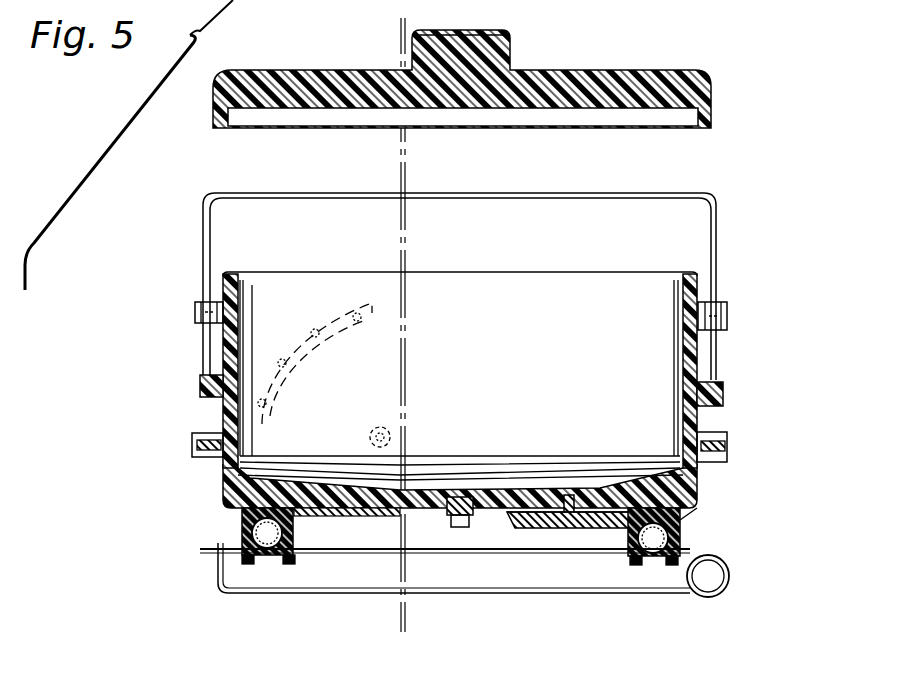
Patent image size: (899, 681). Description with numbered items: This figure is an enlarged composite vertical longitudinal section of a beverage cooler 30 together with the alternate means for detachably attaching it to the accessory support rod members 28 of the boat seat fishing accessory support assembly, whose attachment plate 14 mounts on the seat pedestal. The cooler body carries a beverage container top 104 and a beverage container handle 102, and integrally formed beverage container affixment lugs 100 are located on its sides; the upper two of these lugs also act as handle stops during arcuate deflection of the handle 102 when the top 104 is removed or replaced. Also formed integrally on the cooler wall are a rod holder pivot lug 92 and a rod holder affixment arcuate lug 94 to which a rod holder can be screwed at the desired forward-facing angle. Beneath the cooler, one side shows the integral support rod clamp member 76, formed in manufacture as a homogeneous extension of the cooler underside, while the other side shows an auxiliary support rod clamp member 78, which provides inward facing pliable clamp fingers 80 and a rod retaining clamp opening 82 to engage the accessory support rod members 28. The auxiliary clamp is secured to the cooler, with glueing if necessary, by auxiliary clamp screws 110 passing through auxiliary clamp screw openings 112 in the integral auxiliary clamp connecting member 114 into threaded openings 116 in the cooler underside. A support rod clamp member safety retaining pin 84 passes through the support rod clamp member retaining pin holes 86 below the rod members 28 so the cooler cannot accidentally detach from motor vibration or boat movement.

The beverage container top 104 is at (580, 70).
The beverage container handle 102 is at (572, 193).
The beverage cooler 30 is at (548, 300).
The beverage container affixment lugs 100 is at (195, 313).
The rod holder affixment arcuate lug 94 is at (322, 350).
The rod holder pivot lug 92 is at (370, 440).
The threaded openings 116 is at (569, 495).
The auxiliary clamp screw openings 112 is at (476, 516).
The auxiliary clamp screws 110 is at (574, 524).
The integral auxiliary clamp connecting member 114 is at (526, 528).
The attachment plate 14 is at (362, 516).
The rod retaining clamp opening 82 is at (292, 532).
The accessory support rod members 28 is at (242, 522).
The auxiliary support rod clamp members 78 is at (682, 525).
The inward facing pliable clamp fingers 80 is at (670, 565).
The support rod clamp member retaining pin holes 86 is at (232, 552).
The integral support rod clamp member 76 is at (242, 527).
The support rod clamp member safety retaining pin 84 is at (545, 593).